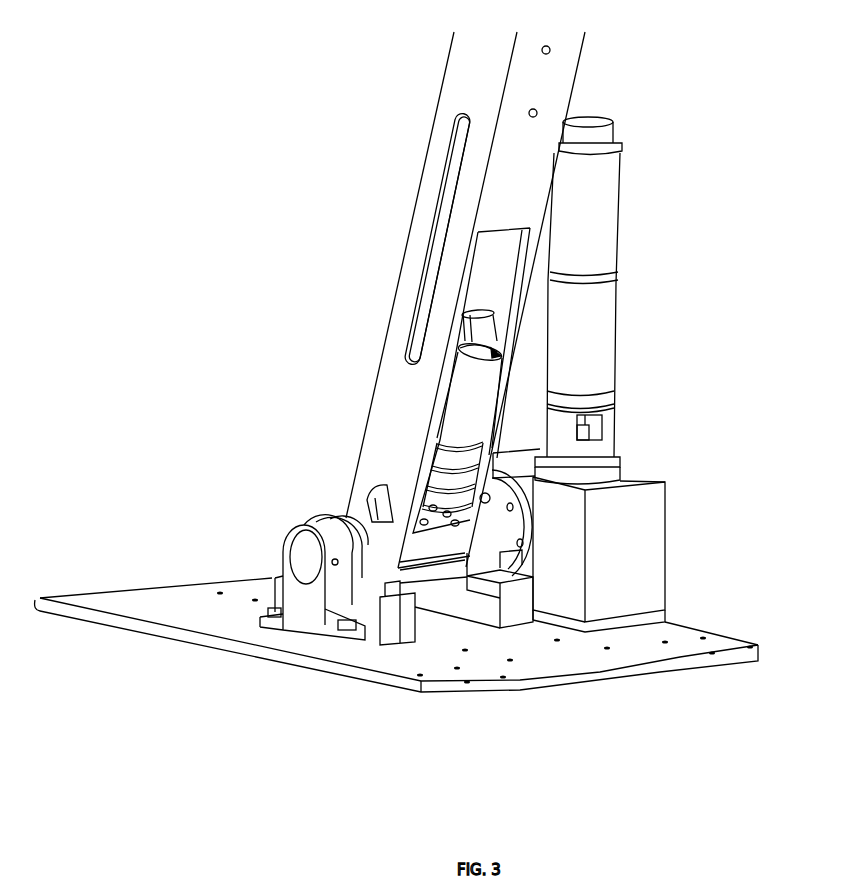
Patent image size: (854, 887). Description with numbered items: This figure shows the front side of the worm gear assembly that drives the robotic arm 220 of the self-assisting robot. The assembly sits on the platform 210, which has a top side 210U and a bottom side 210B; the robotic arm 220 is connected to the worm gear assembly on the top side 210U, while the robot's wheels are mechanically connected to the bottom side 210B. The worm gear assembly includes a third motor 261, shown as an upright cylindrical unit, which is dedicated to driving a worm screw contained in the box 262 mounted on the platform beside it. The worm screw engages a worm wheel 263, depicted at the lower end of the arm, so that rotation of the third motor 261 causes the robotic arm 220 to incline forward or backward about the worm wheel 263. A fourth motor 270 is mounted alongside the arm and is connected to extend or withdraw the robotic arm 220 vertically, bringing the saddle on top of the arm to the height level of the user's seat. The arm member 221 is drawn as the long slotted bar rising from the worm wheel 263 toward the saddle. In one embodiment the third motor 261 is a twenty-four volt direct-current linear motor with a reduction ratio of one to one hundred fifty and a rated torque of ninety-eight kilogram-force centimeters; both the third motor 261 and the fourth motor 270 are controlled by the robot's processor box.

The platform 210 is at (396, 609).
The top side 210U is at (182, 587).
The bottom side 210B is at (133, 632).
The robotic arm 220 is at (439, 300).
The arm 221 is at (394, 296).
The third motor 261 is at (618, 323).
The box 262 is at (667, 497).
The worm wheel 263 is at (347, 508).
The fourth motor 270 is at (495, 423).